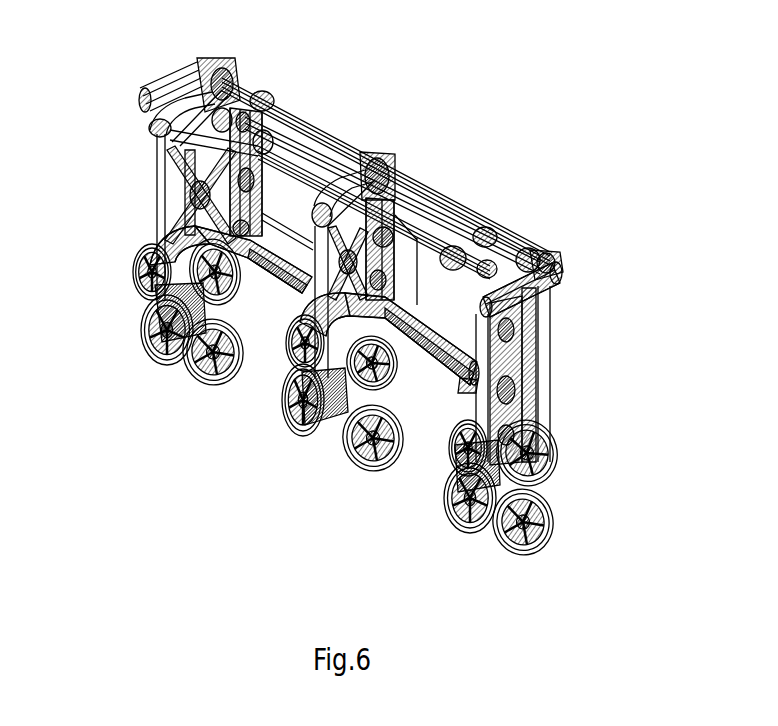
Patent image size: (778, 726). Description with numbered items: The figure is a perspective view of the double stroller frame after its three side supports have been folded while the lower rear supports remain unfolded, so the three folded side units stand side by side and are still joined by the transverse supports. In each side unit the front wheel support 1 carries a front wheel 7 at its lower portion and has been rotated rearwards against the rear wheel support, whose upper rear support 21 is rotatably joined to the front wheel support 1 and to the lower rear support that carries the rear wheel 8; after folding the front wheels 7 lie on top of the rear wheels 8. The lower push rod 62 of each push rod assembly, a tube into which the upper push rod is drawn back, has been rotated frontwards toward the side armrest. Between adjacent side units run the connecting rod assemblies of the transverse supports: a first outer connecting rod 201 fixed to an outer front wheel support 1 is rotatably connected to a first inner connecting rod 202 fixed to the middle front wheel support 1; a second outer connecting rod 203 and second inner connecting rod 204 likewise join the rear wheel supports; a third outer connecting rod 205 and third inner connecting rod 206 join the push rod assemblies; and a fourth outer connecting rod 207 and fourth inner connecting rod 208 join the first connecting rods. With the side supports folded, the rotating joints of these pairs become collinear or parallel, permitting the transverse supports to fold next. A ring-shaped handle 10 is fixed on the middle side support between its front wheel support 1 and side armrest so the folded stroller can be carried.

The front wheel support 1 is at (470, 387).
The front wheel 7 is at (553, 470).
The rear wheel 8 is at (217, 387).
The handle 10 is at (455, 136).
The upper rear support 21 is at (550, 353).
The lower push rod 62 is at (547, 390).
The first outer connecting rod 201 is at (125, 243).
The first inner connecting rod 202 is at (125, 314).
The second outer connecting rod 203 is at (125, 280).
The second inner connecting rod 204 is at (125, 350).
The third outer connecting rod 205 is at (313, 79).
The third inner connecting rod 206 is at (392, 93).
The fourth outer connecting rod 207 is at (125, 170).
The fourth inner connecting rod 208 is at (125, 203).